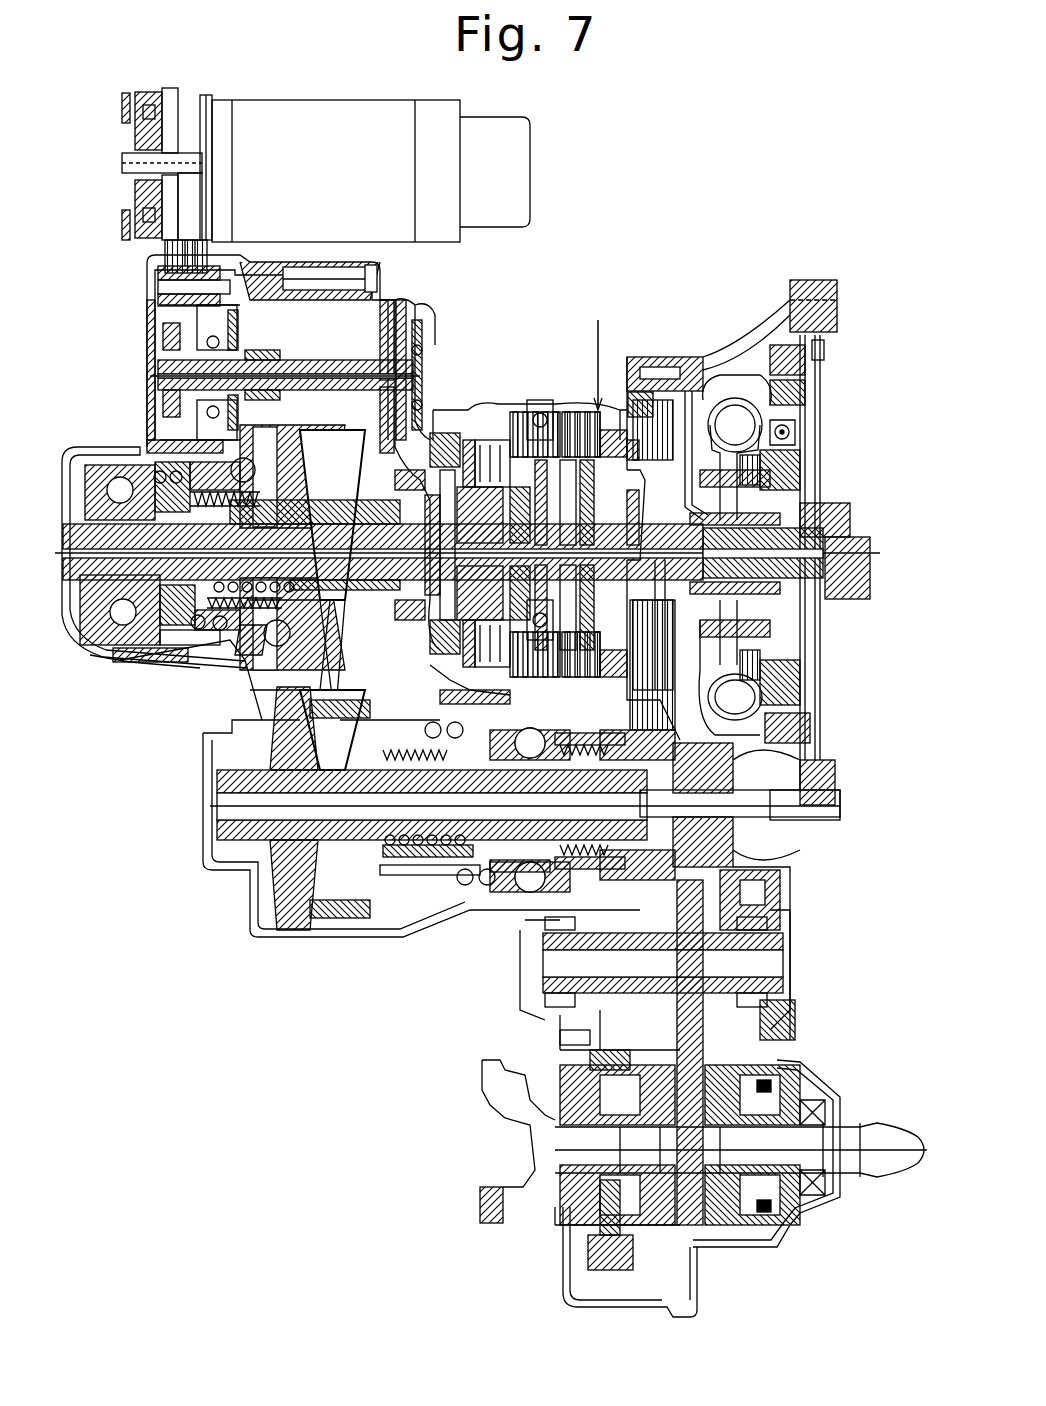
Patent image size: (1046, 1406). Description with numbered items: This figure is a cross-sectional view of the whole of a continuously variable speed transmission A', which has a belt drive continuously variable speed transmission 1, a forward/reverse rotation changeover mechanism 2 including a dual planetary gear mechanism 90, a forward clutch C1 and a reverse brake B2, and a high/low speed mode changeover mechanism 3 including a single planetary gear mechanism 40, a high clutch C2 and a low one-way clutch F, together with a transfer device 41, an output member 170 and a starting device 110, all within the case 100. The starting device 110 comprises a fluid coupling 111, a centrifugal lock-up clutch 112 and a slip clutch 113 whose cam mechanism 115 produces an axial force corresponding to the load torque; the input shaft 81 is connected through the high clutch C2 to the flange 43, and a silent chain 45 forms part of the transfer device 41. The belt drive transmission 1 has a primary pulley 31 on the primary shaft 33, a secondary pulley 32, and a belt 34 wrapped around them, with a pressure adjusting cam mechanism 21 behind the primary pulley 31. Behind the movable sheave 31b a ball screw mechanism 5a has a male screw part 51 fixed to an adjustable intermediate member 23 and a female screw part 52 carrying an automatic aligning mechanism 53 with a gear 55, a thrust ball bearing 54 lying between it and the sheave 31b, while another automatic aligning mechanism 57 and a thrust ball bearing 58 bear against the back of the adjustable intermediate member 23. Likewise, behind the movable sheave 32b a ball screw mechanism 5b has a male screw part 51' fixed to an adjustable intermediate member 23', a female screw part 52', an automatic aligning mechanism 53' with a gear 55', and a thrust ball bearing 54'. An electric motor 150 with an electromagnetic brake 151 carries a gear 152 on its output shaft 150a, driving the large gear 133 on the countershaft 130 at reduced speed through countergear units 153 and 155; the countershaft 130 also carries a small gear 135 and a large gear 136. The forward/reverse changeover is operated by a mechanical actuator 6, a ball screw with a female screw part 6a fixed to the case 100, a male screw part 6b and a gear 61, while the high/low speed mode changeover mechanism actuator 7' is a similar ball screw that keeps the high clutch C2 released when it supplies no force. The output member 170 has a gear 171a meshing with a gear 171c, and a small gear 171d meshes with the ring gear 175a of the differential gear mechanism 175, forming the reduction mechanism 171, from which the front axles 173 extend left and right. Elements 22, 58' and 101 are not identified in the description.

The belt drive continuously variable speed transmission 1 is at (110, 410).
The forward/reverse rotation changeover mechanism 2 is at (440, 420).
The high/low speed mode changeover mechanism 3 is at (602, 352).
The ball screw mechanism 5a is at (180, 462).
The ball screw mechanism 5b is at (440, 910).
The mechanical actuator 6 is at (455, 420).
The female screw part 6a is at (485, 440).
The male screw part 6b is at (533, 400).
The high/low speed mode changeover mechanism actuator 7' is at (583, 482).
The pressure adjusting cam mechanism 21 is at (395, 625).
The gear tooth 22 is at (332, 600).
The adjustable intermediate member 23 is at (129, 676).
The adjustable intermediate member 23' is at (465, 685).
The primary pulley 31 is at (318, 425).
The movable sheave 31b is at (290, 400).
The secondary pulley 32 is at (255, 915).
The movable sheave 32b is at (360, 888).
The primary shaft 33 is at (62, 540).
The belt 34 is at (330, 435).
The single planetary gear mechanism 40 is at (630, 885).
The transfer device 41 is at (770, 690).
The flange 43 is at (770, 875).
The silent chain 45 is at (812, 725).
The male screw part 51 is at (166, 662).
The male screw part 51' is at (520, 925).
The female screw part 52 is at (213, 653).
The female screw part 52' is at (477, 914).
The automatic aligning mechanism 53 is at (225, 606).
The automatic aligning mechanism 53' is at (430, 877).
The thrust ball bearing 54 is at (240, 552).
The thrust ball bearing 54' is at (454, 863).
The gear 55 is at (193, 675).
The gear 55' is at (304, 645).
The automatic aligning mechanism 57 is at (98, 470).
The thrust ball bearing 58 is at (136, 499).
The spring 58' is at (590, 825).
The gear 61 is at (432, 495).
The input shaft 81 is at (860, 518).
The dual planetary gear mechanism 90 is at (505, 395).
The case 100 is at (400, 305).
The casing flange 101 is at (685, 355).
The starting device 110 is at (845, 318).
The fluid coupling 111 is at (738, 350).
The centrifugal lock-up clutch 112 is at (830, 380).
The slip clutch 113 is at (800, 435).
The cam mechanism 115 is at (802, 468).
The first countershaft 130 is at (318, 360).
The large gear 133 is at (230, 345).
The small gear 135 is at (265, 352).
The large gear 136 is at (425, 312).
The electric motor 150 is at (322, 100).
The output shaft 150a is at (122, 165).
The electromagnetic brake 151 is at (146, 92).
The gear 152 is at (188, 140).
The countergear unit 153 is at (190, 235).
The countergear unit 155 is at (215, 290).
The output member 170 is at (783, 847).
The reduction mechanism 171 is at (552, 1046).
The gear 171a is at (838, 785).
The gear 171c is at (780, 1020).
The small gear 171d is at (600, 990).
The front axles 173 is at (885, 1175).
The differential gear mechanism 175 is at (774, 1066).
The ring gear 175a is at (605, 1275).
The continuously variable speed transmission A' is at (653, 440).
The reverse brake B2 is at (426, 374).
The forward clutch C1 is at (555, 410).
The high clutch C2 is at (635, 360).
The low one-way clutch F is at (640, 495).